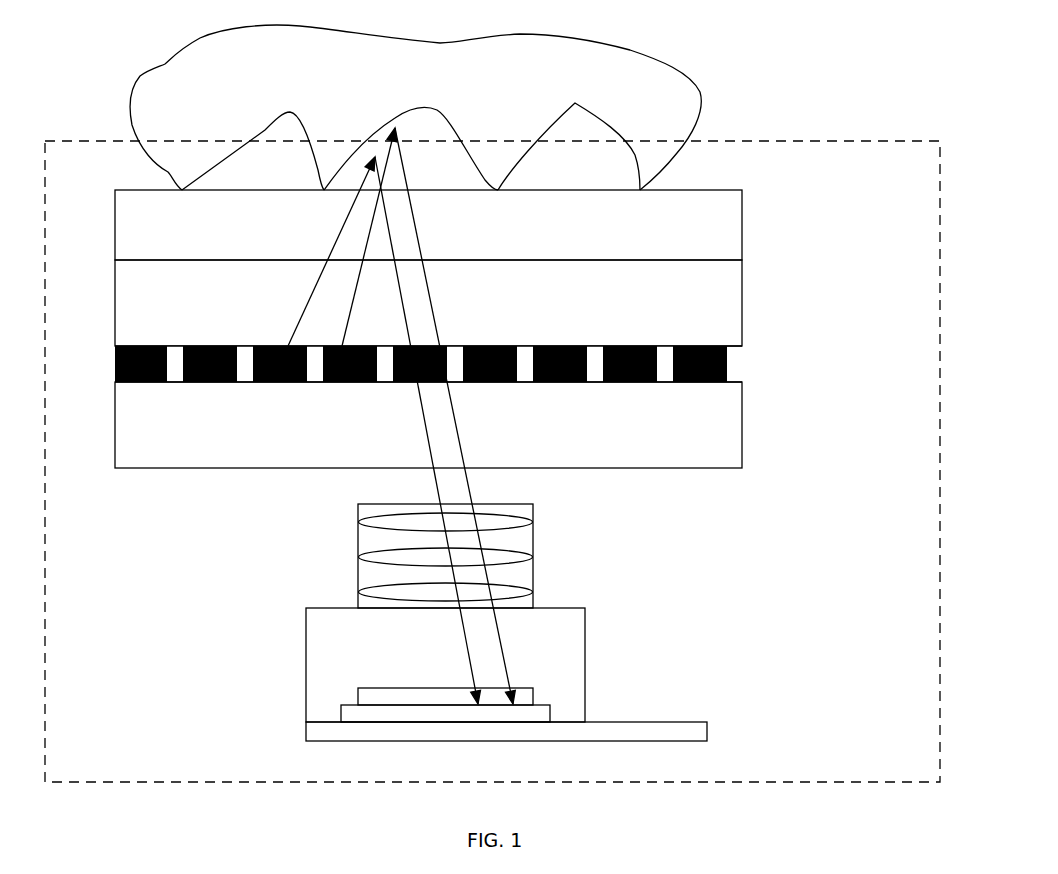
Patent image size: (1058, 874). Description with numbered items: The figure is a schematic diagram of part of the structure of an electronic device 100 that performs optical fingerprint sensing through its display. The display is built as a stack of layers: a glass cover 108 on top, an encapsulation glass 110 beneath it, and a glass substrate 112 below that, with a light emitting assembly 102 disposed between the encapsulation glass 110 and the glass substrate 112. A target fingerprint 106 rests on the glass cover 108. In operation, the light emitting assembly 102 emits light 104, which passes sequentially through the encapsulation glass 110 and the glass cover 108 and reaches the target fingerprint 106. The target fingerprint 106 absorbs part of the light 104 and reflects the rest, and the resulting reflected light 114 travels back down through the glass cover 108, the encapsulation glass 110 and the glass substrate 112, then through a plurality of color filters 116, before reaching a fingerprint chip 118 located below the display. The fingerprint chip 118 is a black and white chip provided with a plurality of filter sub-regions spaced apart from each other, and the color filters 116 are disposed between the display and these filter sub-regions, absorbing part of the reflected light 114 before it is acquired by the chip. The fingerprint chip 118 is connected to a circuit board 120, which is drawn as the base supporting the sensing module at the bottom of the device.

The electronic device 100 is at (843, 141).
The light emitting assembly 102 is at (726, 365).
The light 104 is at (303, 320).
The target fingerprint 106 is at (694, 134).
The glass cover 108 is at (742, 225).
The encapsulation glass 110 is at (742, 308).
The glass substrate 112 is at (742, 428).
The reflected light 114 is at (507, 647).
The color filters 116 is at (533, 690).
The fingerprint chip 118 is at (550, 708).
The circuit board 120 is at (683, 722).